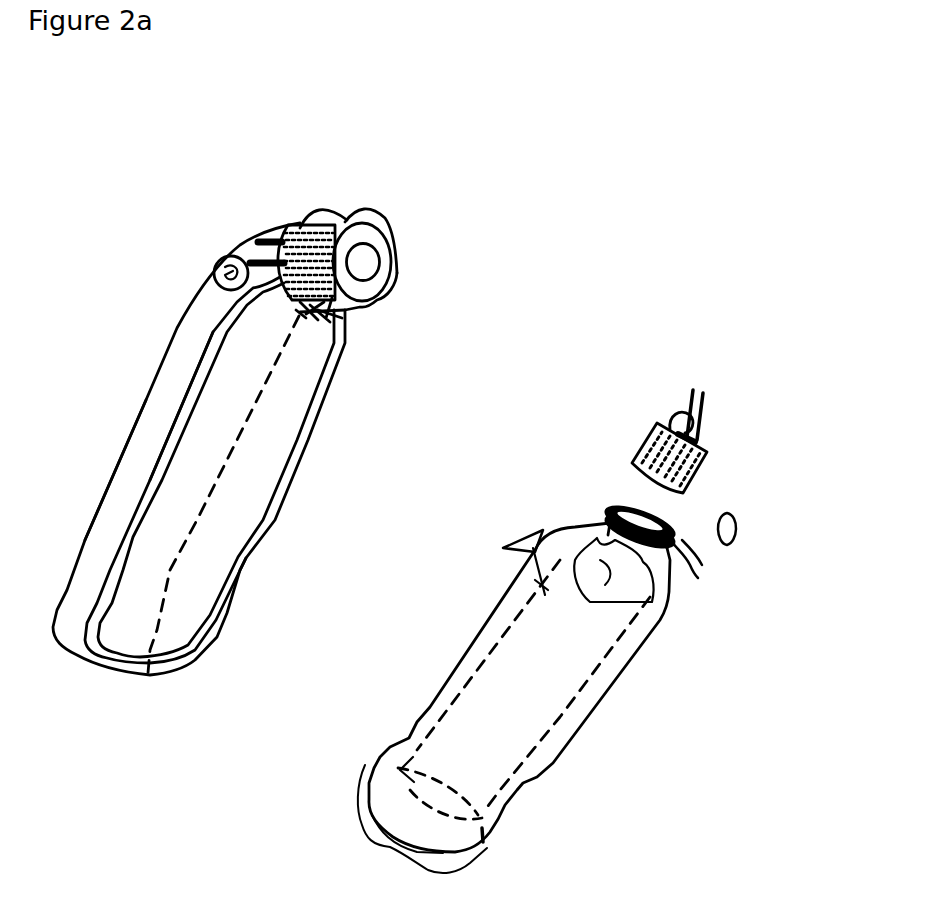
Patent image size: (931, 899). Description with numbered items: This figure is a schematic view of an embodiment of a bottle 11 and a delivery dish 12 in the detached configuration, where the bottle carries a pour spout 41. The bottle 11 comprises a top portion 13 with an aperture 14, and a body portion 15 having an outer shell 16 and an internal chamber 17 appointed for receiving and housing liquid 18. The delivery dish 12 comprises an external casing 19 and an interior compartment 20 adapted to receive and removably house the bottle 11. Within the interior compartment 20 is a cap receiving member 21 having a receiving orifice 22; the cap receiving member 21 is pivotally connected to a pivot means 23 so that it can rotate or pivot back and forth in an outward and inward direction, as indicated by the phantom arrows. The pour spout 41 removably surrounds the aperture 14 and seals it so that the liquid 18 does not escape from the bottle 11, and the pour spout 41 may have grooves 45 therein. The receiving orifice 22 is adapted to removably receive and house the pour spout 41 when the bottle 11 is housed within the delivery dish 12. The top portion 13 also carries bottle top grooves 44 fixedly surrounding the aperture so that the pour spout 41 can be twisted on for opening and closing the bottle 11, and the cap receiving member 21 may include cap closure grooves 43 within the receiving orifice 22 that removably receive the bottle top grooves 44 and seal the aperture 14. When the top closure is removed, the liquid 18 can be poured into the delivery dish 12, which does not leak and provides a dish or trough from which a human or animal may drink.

The bottle 11 is at (657, 626).
The delivery dish 12 is at (180, 328).
The top portion 13 is at (607, 509).
The aperture 14 is at (673, 543).
The body portion 15 is at (443, 677).
The outer shell 16 is at (500, 623).
The internal chamber 17 is at (530, 550).
The liquid 18 is at (483, 683).
The external casing 19 is at (109, 484).
The interior compartment 20 is at (268, 433).
The cap receiving member 21 is at (357, 198).
The receiving orifice 22 is at (363, 267).
The pivot means 23 is at (214, 272).
The pour spout 41 is at (710, 453).
The cap closure grooves 43 is at (323, 226).
The bottle top grooves 44 is at (608, 514).
The grooves 45 is at (647, 442).